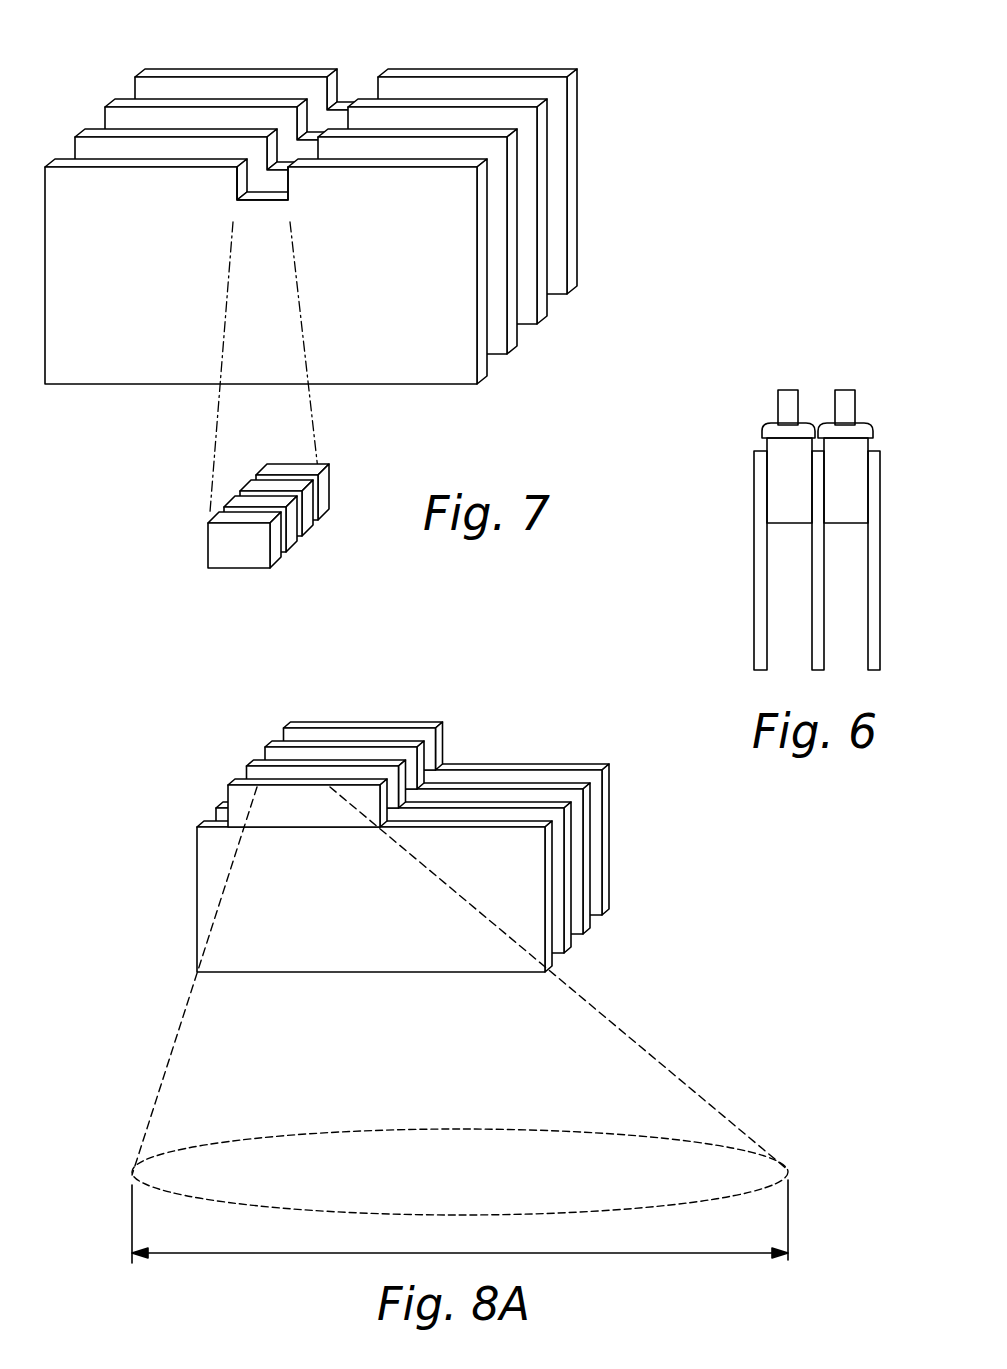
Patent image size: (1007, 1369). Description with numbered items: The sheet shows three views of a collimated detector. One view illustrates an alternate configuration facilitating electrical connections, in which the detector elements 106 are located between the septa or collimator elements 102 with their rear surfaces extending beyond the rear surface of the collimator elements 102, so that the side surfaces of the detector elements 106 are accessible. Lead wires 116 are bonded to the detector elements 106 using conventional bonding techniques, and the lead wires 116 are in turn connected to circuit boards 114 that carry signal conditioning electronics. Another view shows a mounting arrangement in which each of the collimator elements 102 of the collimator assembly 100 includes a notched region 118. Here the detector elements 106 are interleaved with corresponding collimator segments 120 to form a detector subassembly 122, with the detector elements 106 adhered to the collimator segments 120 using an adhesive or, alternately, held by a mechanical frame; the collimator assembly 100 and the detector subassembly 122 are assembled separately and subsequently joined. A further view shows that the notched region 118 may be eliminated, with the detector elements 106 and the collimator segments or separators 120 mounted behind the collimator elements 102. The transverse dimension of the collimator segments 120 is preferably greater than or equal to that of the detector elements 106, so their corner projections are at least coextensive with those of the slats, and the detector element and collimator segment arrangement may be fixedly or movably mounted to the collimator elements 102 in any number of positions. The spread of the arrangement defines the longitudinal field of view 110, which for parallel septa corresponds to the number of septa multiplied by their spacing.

In FIG. 7, the collimator assembly 100 is at (338, 293).
In FIG. 7, the collimator elements 102 is at (409, 393).
In FIG. 6, the collimator elements 102 is at (868, 577).
In FIG. 7, the detector elements 106 is at (310, 515).
In FIG. 6, the detector elements 106 is at (842, 510).
In FIG. 8A, the longitudinal field of view 110 is at (252, 1253).
In FIG. 6, the circuit boards 114 is at (856, 403).
In FIG. 6, the lead wires 116 is at (762, 440).
In FIG. 7, the notched region 118 is at (350, 82).
In FIG. 7, the collimator segments 120 is at (235, 517).
In FIG. 8A, the collimator segments 120 is at (263, 742).
In FIG. 7, the detector subassembly 122 is at (228, 493).